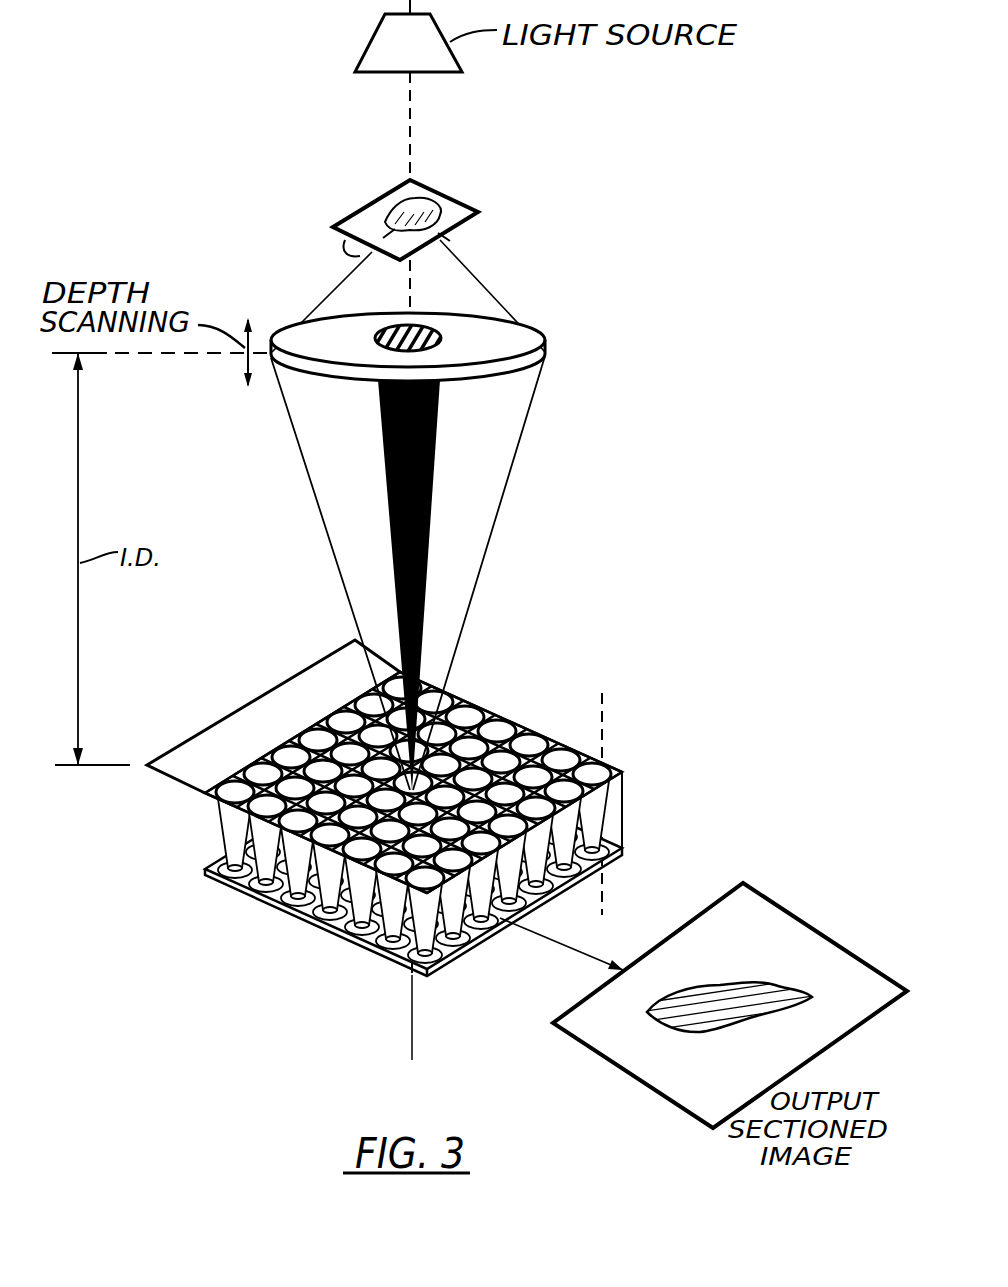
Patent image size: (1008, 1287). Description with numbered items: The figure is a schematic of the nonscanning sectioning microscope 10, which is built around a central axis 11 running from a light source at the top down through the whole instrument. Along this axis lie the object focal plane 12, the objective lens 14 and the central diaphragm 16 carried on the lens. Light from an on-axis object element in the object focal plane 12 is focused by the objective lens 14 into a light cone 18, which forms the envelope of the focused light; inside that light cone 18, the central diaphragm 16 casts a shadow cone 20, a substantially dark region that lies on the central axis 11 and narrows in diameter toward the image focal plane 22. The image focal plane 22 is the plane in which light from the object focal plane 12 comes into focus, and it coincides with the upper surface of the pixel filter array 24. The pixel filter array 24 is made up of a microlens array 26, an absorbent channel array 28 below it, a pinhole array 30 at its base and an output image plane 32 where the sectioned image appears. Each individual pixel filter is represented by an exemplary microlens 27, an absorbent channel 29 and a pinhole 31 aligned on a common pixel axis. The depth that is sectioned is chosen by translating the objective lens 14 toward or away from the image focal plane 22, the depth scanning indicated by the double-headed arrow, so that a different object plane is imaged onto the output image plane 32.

The nonscanning sectioning microscope 10 is at (322, 178).
The central axis 11 is at (410, 122).
The object focal plane 12 is at (460, 212).
The objective lens 14 is at (322, 328).
The central diaphragm 16 is at (440, 332).
The light cone 18 is at (505, 488).
The shadow cone 20 is at (386, 463).
The image focal plane 22 is at (228, 715).
The pixel filter array 24 is at (207, 813).
The microlens array 26 is at (233, 878).
The microlens 27 is at (610, 762).
The absorbent channel array 28 is at (215, 838).
The absorbent channel 29 is at (627, 810).
The pinhole array 30 is at (340, 937).
The pinhole 31 is at (625, 850).
The output image plane 32 is at (428, 975).